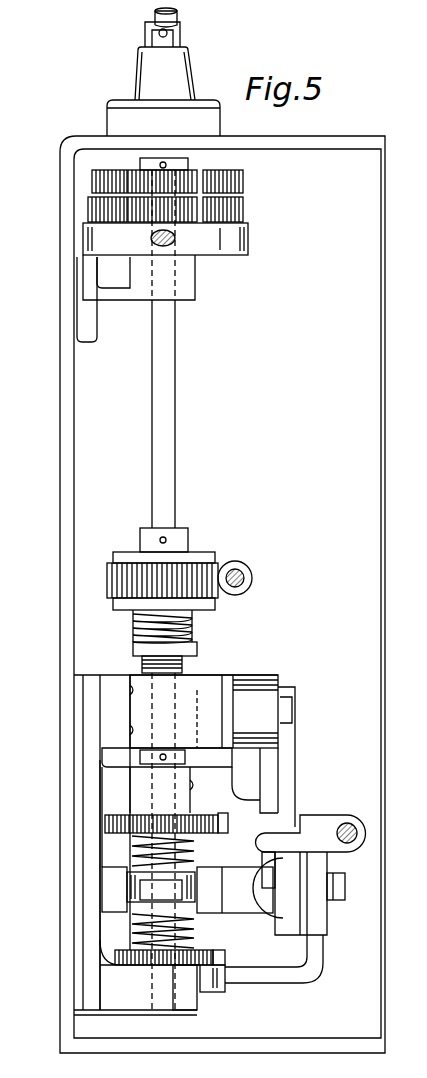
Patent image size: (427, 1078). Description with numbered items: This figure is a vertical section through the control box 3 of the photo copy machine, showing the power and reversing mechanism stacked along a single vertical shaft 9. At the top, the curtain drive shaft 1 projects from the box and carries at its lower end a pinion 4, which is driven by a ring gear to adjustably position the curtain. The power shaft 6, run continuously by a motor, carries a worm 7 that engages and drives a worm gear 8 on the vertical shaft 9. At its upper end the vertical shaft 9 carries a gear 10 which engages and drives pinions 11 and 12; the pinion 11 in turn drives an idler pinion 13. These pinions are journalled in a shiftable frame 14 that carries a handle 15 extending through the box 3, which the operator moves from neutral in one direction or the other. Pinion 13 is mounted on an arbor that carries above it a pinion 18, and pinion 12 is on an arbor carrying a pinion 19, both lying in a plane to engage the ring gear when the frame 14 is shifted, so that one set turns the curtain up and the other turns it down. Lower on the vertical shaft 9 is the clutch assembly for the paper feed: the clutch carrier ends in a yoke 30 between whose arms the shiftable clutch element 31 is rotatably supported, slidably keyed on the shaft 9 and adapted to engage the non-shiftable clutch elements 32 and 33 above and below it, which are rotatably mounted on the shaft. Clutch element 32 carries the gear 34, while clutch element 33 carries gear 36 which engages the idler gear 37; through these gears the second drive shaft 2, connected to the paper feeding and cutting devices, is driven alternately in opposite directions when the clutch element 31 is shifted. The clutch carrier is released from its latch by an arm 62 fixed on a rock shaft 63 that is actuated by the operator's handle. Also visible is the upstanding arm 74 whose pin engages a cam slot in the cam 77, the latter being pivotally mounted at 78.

The drive shaft 1 is at (168, 34).
The second drive shaft 2 is at (178, 15).
The control box 3 is at (306, 140).
The pinion 4 is at (160, 190).
The power shaft 6 is at (243, 584).
The worm 7 is at (250, 574).
The worm gear 8 is at (122, 590).
The vertical shaft 9 is at (176, 426).
The gear 10 is at (148, 210).
The pinion 11 is at (218, 238).
The pinion 12 is at (105, 207).
The idler pinion 13 is at (243, 212).
The shiftable frame 14 is at (248, 245).
The handle 15 is at (173, 243).
The pinion 18 is at (243, 180).
The pinion 19 is at (92, 183).
The yoke 30 is at (214, 890).
The shiftable clutch element 31 is at (190, 870).
The clutch element 32 is at (145, 847).
The clutch element 33 is at (165, 937).
The gear 34 is at (105, 826).
The gear 36 is at (142, 964).
The idler gear 37 is at (226, 956).
The arm 62 is at (282, 838).
The rock shaft 63 is at (348, 824).
The upstanding arm 74 is at (287, 742).
The cam 77 is at (257, 700).
The pivot 78 is at (293, 708).